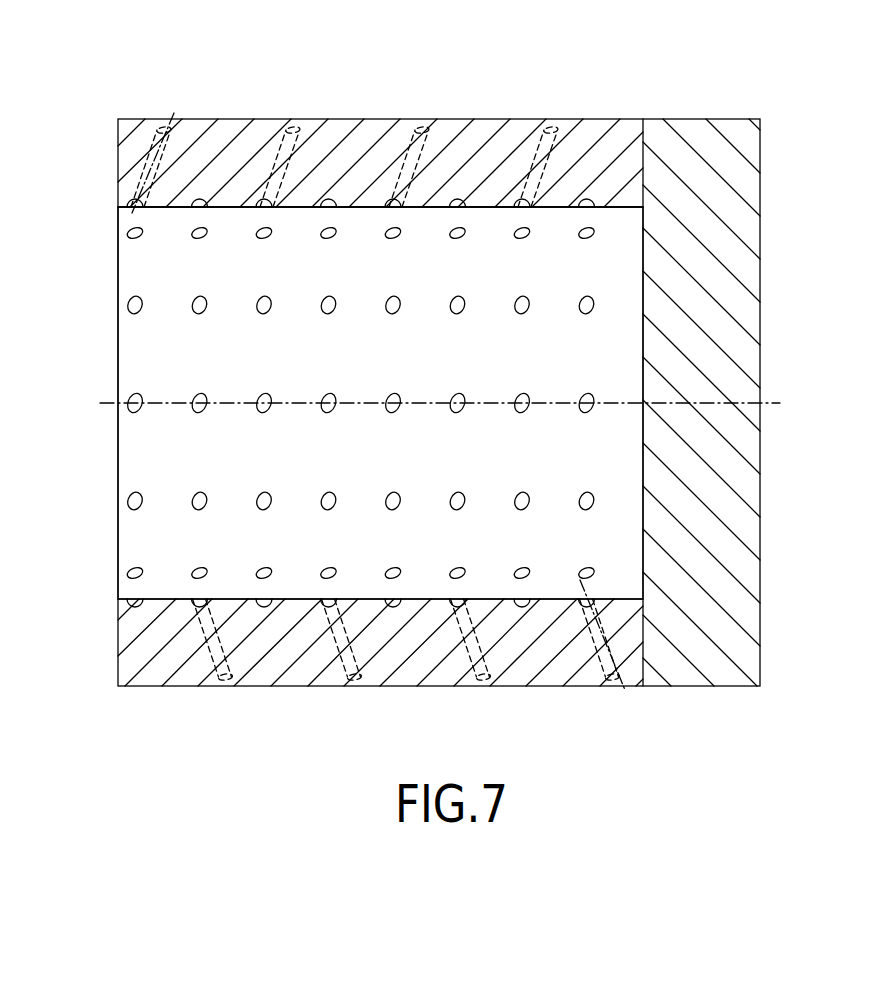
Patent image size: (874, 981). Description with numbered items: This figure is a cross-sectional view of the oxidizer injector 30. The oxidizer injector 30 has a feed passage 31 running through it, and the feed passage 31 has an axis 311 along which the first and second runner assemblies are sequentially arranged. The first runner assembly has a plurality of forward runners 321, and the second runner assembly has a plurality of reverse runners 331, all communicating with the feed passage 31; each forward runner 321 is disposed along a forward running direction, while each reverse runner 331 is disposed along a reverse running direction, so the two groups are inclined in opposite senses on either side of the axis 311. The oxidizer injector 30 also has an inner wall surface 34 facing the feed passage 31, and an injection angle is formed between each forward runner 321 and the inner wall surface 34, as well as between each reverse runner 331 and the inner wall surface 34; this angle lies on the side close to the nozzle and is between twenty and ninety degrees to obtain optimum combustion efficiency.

The oxidizer injector 30 is at (404, 114).
The feed passage 31 is at (144, 361).
The inner wall surface 34 is at (370, 208).
The axis 311 is at (782, 400).
The forward runners 321 is at (597, 203).
The reverse runners 331 is at (548, 140).